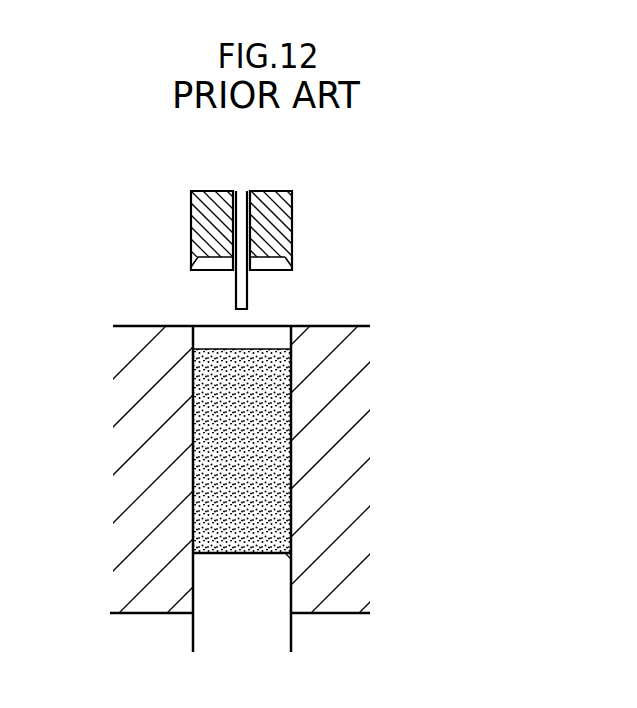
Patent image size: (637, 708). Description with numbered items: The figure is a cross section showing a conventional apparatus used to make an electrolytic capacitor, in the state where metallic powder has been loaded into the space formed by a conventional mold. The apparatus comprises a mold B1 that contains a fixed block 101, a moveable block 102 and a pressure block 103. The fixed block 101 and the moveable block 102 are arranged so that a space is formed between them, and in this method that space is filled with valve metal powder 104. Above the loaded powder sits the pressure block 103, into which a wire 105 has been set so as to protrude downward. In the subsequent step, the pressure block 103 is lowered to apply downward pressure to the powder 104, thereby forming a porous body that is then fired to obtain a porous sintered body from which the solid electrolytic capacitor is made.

The fixed block 101 is at (352, 460).
The moveable block 102 is at (232, 629).
The pressure block 103 is at (192, 228).
The valve metal powder 104 is at (262, 360).
The wire 105 is at (242, 202).
The mold B1 is at (350, 226).